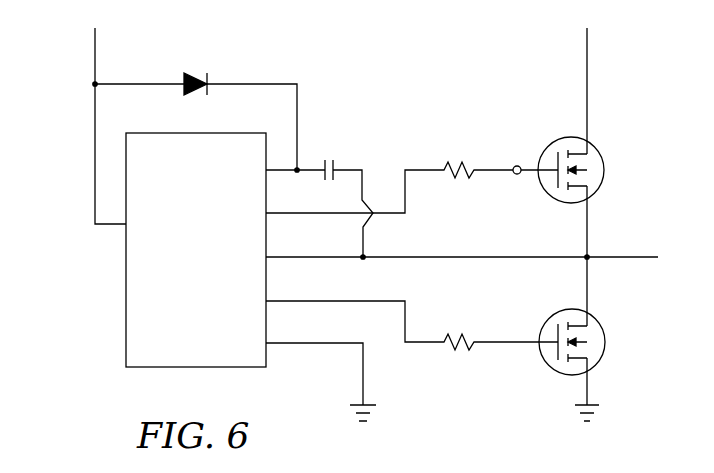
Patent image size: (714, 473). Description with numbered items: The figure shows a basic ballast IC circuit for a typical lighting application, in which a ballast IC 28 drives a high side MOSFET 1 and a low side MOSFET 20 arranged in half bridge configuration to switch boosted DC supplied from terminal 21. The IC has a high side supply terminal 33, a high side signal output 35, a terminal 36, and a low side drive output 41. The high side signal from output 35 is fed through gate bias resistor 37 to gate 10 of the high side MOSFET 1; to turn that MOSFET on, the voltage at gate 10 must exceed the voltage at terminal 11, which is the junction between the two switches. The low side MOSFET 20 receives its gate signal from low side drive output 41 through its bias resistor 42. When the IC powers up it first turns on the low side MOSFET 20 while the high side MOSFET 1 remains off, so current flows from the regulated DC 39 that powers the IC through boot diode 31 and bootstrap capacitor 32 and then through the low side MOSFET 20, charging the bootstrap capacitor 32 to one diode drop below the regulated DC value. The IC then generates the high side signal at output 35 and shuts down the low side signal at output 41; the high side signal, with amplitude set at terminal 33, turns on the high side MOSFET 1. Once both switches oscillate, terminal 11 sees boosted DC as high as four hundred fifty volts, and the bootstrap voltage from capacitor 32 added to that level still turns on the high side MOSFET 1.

The high side MOSFET 1 is at (598, 148).
The gate 10 is at (521, 162).
The terminal 11 is at (620, 256).
The low side MOSFET 20 is at (600, 325).
The terminal 21 is at (586, 40).
The ballast IC 28 is at (126, 293).
The boot diode 31 is at (200, 72).
The bootstrap capacitor 32 is at (328, 158).
The terminal 33 is at (280, 166).
The high side signal output 35 is at (280, 210).
The VS terminal 36 is at (280, 254).
The gate bias resistor 37 is at (460, 165).
The regulated DC 39 is at (94, 40).
The low side drive output 41 is at (280, 298).
The bias resistor 42 is at (462, 335).